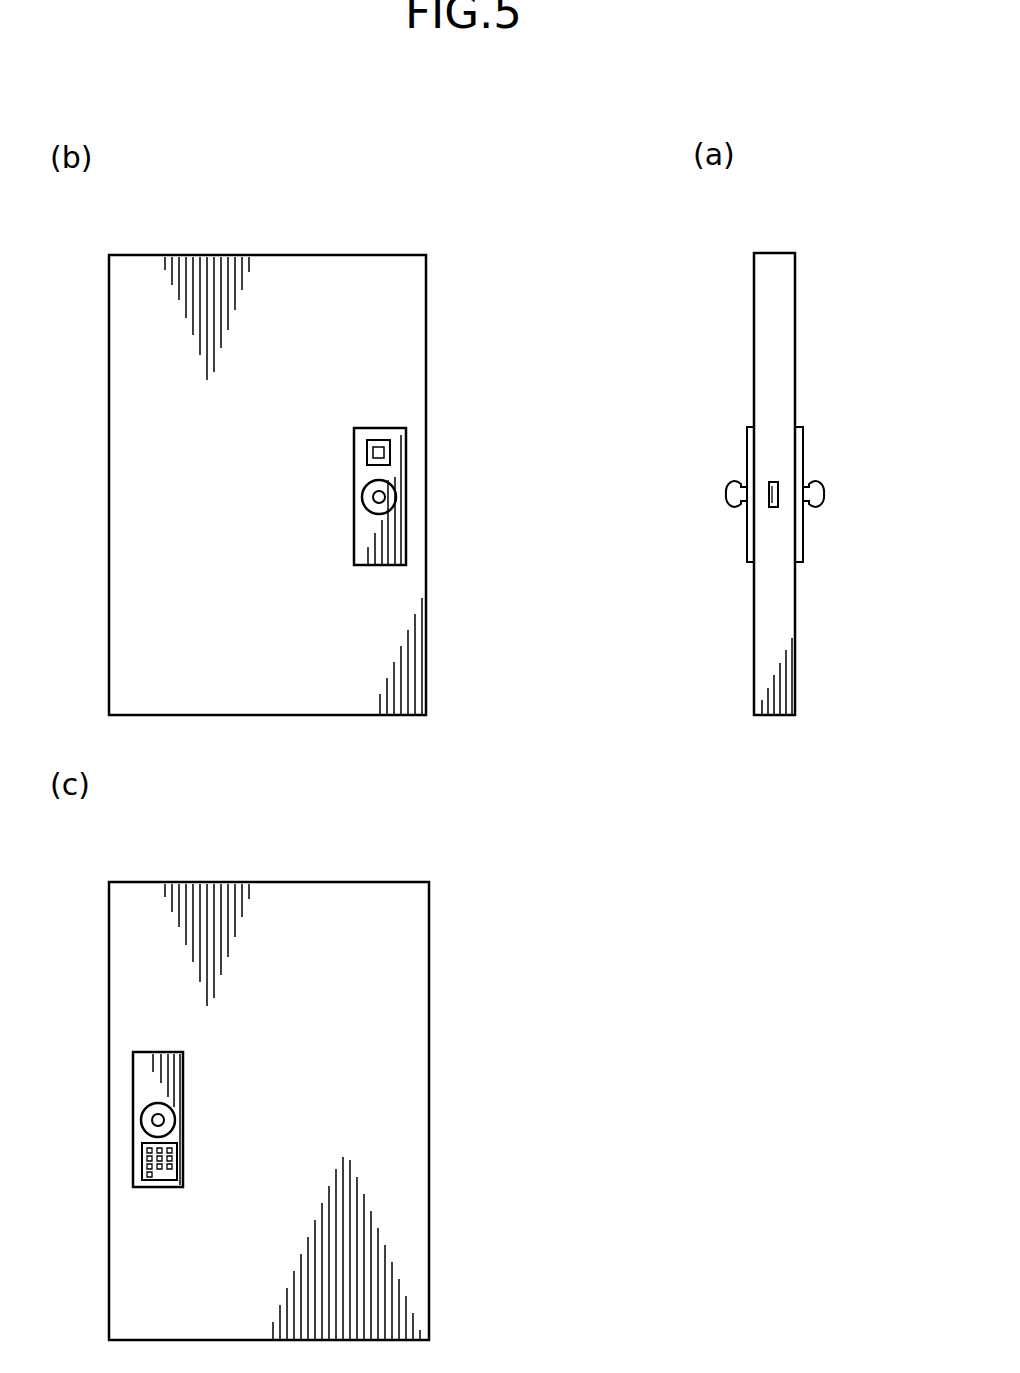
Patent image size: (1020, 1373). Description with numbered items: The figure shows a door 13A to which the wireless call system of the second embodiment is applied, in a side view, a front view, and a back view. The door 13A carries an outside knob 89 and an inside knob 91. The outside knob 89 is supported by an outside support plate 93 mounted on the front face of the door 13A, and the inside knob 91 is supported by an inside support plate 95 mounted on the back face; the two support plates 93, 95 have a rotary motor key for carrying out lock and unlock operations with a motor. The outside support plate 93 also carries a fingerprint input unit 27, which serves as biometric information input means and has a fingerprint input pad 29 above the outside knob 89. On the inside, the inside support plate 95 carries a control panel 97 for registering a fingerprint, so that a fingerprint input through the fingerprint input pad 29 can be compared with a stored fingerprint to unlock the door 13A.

In FIG. 5A, the door 13A is at (796, 342).
In FIG. 5B, the door 13A is at (427, 332).
In FIG. 5C, the door 13A is at (429, 1003).
In FIG. 5B, the fingerprint input unit 27 is at (335, 468).
In FIG. 5B, the fingerprint input pad 29 is at (383, 438).
In FIG. 5A, the outside knob 89 is at (725, 496).
In FIG. 5B, the outside knob 89 is at (362, 497).
In FIG. 5A, the inside knob 91 is at (824, 496).
In FIG. 5C, the inside knob 91 is at (178, 1122).
In FIG. 5A, the outside support plate 93 is at (747, 442).
In FIG. 5B, the outside support plate 93 is at (354, 556).
In FIG. 5A, the inside support plate 95 is at (803, 442).
In FIG. 5C, the inside support plate 95 is at (184, 1073).
In FIG. 5C, the control panel 97 is at (177, 1172).